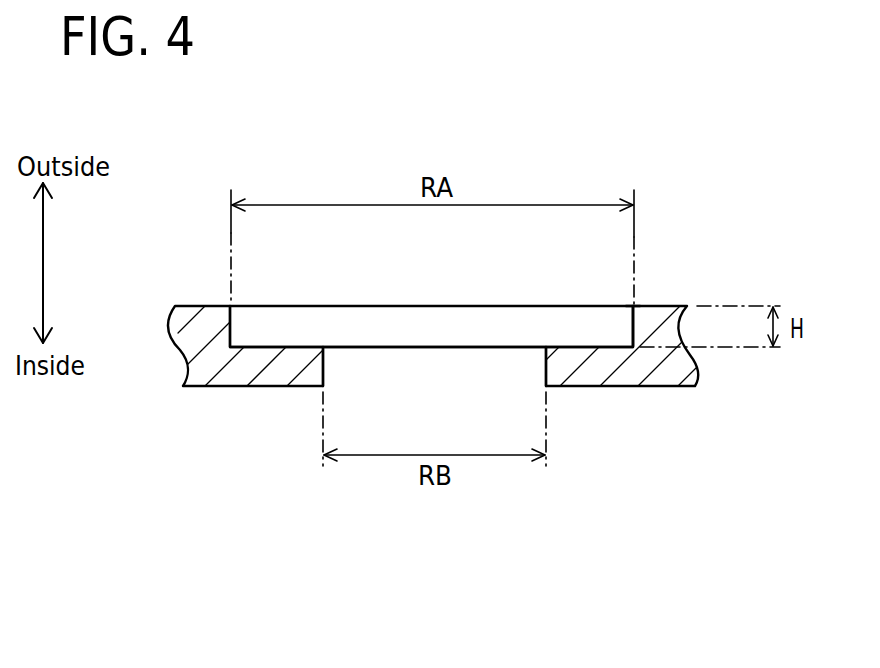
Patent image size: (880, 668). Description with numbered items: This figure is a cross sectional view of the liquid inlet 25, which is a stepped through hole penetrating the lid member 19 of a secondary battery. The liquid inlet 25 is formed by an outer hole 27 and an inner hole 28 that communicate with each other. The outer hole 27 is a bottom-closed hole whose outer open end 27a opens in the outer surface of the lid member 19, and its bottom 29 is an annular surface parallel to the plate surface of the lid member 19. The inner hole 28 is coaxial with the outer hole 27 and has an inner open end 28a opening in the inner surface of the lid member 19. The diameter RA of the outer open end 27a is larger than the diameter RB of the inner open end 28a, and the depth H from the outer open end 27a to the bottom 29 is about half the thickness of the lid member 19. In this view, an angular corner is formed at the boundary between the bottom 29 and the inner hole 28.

The lid member 19 is at (186, 353).
The liquid inlet 25 is at (328, 304).
The outer hole 27 is at (630, 330).
The outer open end 27a is at (630, 307).
The inner hole 28 is at (545, 372).
The inner open end 28a is at (328, 374).
The bottom 29 is at (578, 334).